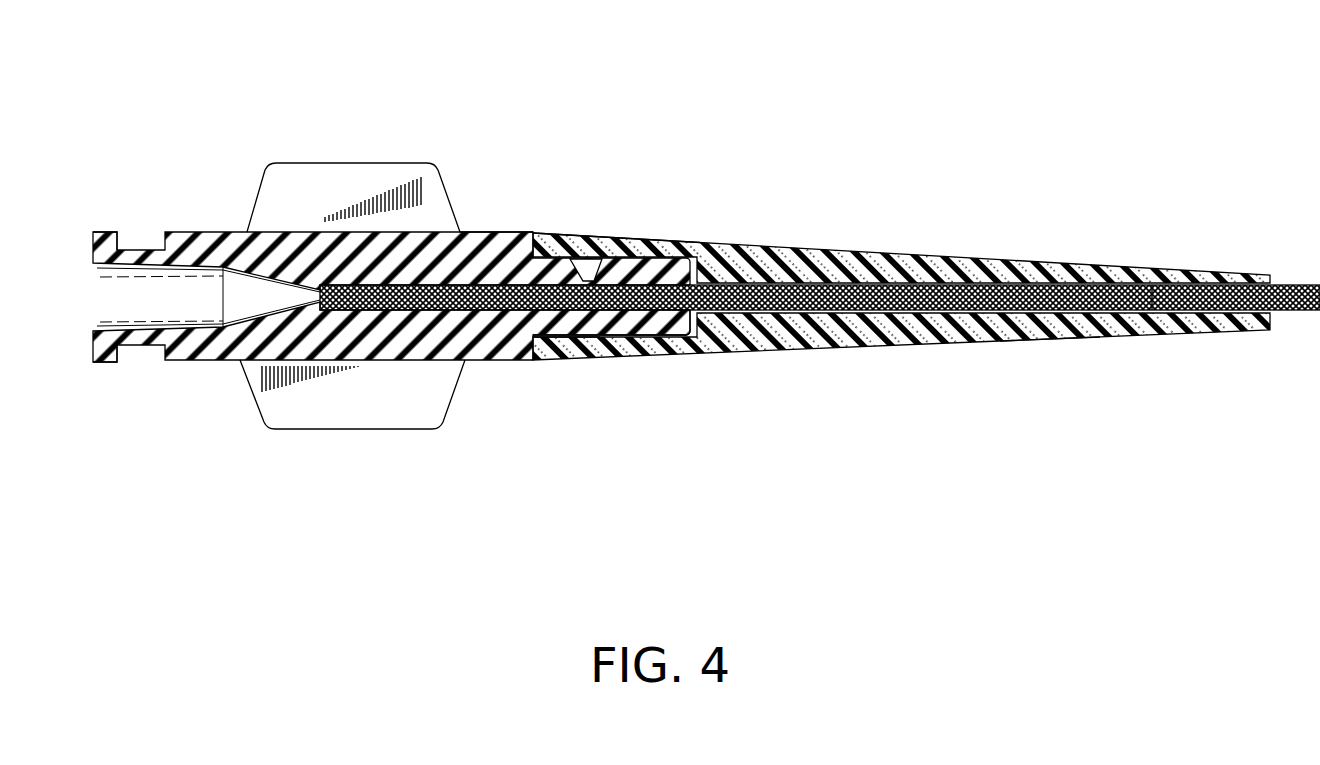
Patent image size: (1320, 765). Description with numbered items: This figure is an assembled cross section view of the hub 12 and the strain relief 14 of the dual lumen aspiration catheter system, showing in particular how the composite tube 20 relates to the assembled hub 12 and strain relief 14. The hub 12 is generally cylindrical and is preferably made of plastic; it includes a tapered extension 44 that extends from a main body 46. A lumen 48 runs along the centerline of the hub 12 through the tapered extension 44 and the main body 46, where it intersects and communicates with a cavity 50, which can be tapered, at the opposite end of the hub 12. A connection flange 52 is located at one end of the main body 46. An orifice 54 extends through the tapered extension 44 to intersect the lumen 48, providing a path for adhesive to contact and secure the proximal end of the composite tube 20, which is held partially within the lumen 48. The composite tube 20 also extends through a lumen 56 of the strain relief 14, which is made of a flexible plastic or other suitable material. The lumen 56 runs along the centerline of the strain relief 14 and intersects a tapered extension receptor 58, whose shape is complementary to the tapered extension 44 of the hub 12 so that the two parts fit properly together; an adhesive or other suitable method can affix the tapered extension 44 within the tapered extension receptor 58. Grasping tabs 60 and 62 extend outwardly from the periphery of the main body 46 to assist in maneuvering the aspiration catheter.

The hub 12 is at (382, 195).
The strain relief 14 is at (901, 194).
The composite tube 20 is at (820, 346).
The tapered extension 44 is at (611, 352).
The main body 46 is at (507, 199).
The lumen 48 is at (640, 215).
The cavity 50 is at (171, 296).
The connection flange 52 is at (83, 269).
The orifice 54 is at (607, 243).
The lumen 56 is at (1067, 343).
The tapered extension receptor 58 is at (594, 379).
The grasping tab 60 is at (353, 153).
The grasping tab 62 is at (352, 438).